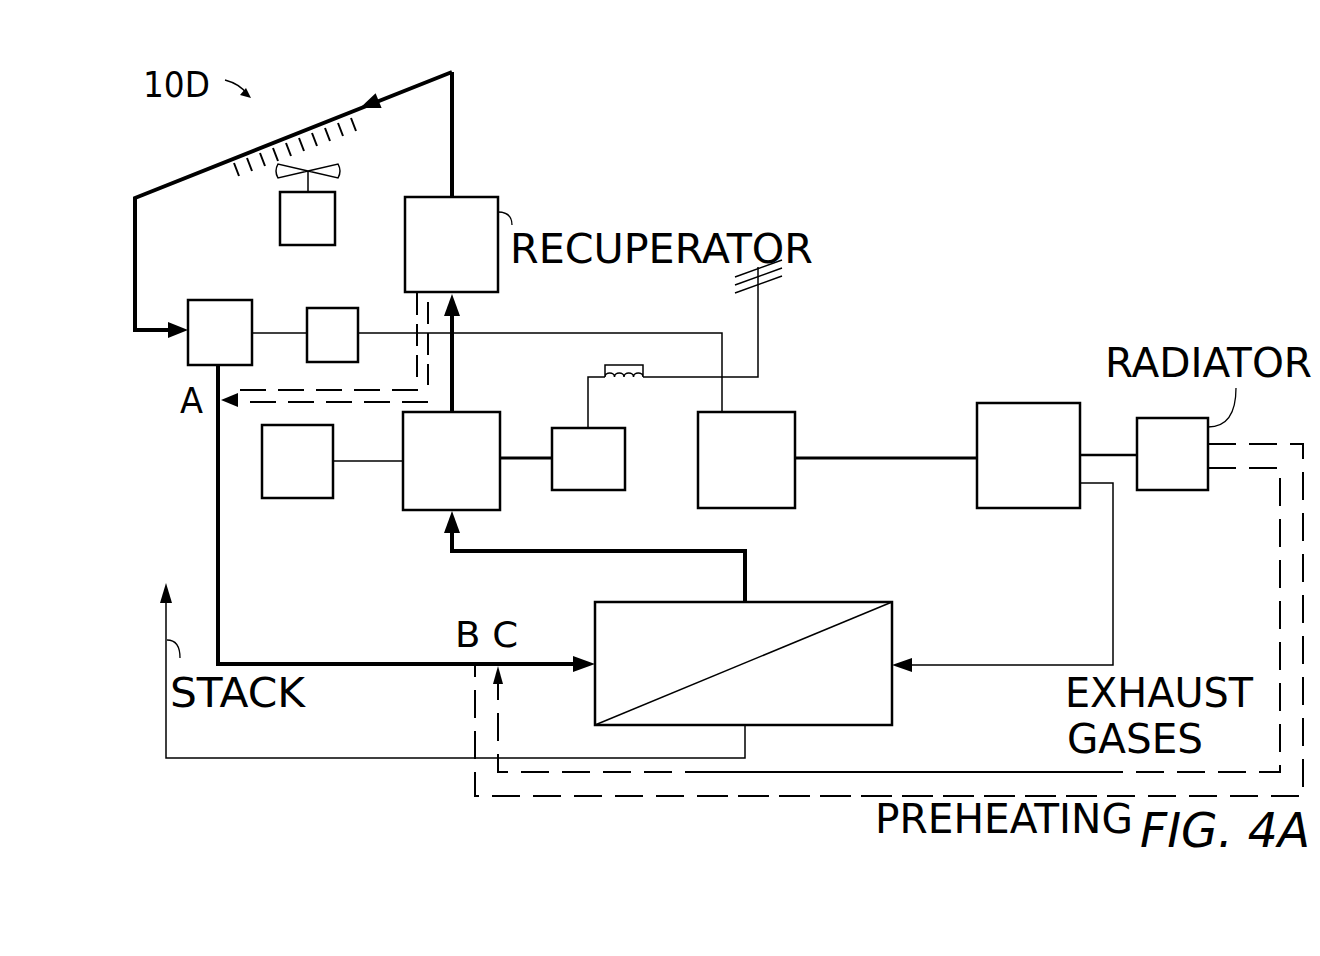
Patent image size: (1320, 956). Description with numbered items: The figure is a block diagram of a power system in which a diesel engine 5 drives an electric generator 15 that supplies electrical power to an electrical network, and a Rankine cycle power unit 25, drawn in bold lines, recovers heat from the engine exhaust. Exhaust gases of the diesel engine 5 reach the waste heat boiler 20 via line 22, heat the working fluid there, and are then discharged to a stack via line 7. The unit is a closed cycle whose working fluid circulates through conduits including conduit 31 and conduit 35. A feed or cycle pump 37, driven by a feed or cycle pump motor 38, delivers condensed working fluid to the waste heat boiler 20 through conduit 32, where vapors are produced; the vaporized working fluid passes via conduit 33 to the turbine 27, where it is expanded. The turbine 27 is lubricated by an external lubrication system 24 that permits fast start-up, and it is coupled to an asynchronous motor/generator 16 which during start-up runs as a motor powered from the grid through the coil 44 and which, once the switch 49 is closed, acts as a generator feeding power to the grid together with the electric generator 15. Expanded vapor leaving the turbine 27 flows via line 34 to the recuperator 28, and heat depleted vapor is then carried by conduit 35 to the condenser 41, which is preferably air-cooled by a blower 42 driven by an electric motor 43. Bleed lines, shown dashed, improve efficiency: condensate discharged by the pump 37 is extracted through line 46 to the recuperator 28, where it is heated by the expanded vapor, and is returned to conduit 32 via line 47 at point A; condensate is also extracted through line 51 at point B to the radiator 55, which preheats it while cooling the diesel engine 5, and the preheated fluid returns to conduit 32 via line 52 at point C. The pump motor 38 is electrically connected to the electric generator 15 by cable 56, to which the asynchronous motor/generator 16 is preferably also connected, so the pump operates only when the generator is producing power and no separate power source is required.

The Rankine cycle power unit 25 is at (199, 154).
The conduit 35 is at (433, 73).
The condenser 41 is at (320, 112).
The blower 42 is at (278, 170).
The electric motor 43 is at (280, 221).
The conduit 31 is at (137, 227).
The recuperator 28 is at (498, 197).
The feed or cycle pump 37 is at (238, 300).
The feed or cycle pump motor 38 is at (342, 307).
The cable 56 is at (698, 333).
The line 46 is at (417, 346).
The line 34 is at (455, 345).
The line 47 is at (355, 403).
The turbine 27 is at (510, 398).
The external lubrication system 24 is at (333, 425).
The alternator 16 is at (615, 428).
The coil 44 is at (632, 378).
The switch 49 is at (618, 365).
The electric generator 15 is at (772, 412).
The diesel engine 5 is at (1053, 403).
The radiator 55 is at (1172, 418).
The line 22 is at (1113, 562).
The waste heat boiler 20 is at (877, 602).
The conduit 32 is at (218, 533).
The conduit 33 is at (617, 551).
The line 7 is at (395, 758).
The line 52 is at (787, 772).
The line 51 is at (777, 797).